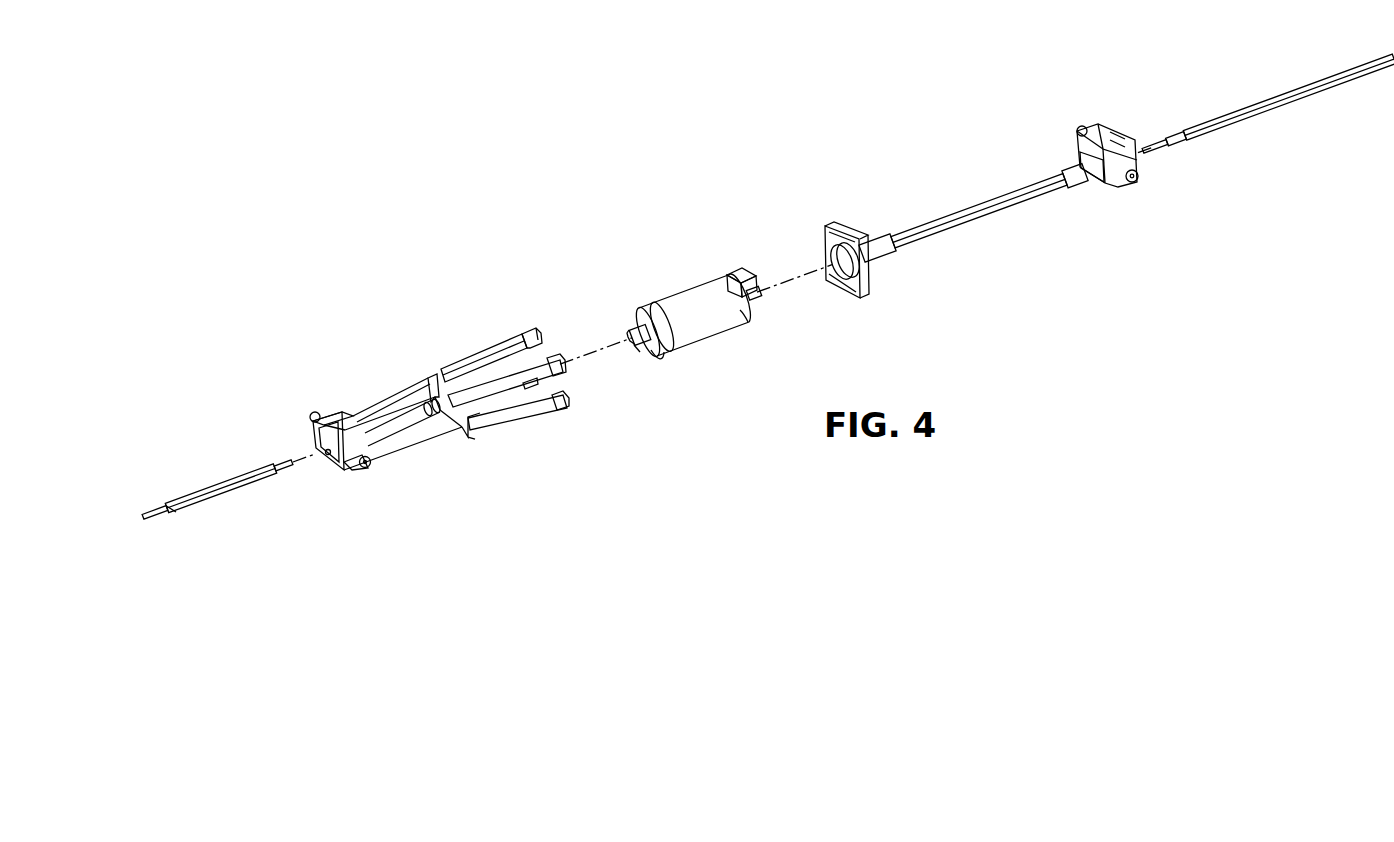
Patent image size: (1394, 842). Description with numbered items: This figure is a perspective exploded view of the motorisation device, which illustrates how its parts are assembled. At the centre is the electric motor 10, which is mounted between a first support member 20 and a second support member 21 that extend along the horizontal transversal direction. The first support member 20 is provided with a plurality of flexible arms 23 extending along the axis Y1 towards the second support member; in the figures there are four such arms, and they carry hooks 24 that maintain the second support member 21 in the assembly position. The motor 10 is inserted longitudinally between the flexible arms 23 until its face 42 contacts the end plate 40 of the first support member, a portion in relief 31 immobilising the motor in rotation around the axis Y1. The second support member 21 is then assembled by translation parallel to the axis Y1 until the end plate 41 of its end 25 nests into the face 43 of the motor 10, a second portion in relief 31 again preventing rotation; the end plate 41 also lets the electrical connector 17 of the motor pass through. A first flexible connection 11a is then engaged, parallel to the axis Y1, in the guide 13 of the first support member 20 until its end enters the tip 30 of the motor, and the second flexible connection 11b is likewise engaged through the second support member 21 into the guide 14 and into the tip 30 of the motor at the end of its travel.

The electric motor 10 is at (690, 293).
The first flexible connection 11a is at (220, 486).
The second flexible connection 11b is at (1296, 88).
The guide 13 is at (400, 421).
The guide 14 is at (940, 222).
The electrical connector 17 is at (740, 268).
The first support member 20 is at (368, 386).
The second support member 21 is at (973, 223).
The flexible arms 23 is at (477, 356).
The hooks 24 is at (531, 332).
The end 25 is at (830, 222).
The tip 30 is at (638, 326).
The portion in relief 31 is at (640, 352).
The end plate 40 is at (472, 420).
The end plate 41 is at (826, 250).
The face 42 is at (657, 352).
The face 43 is at (748, 322).
The axis Y1 is at (773, 250).